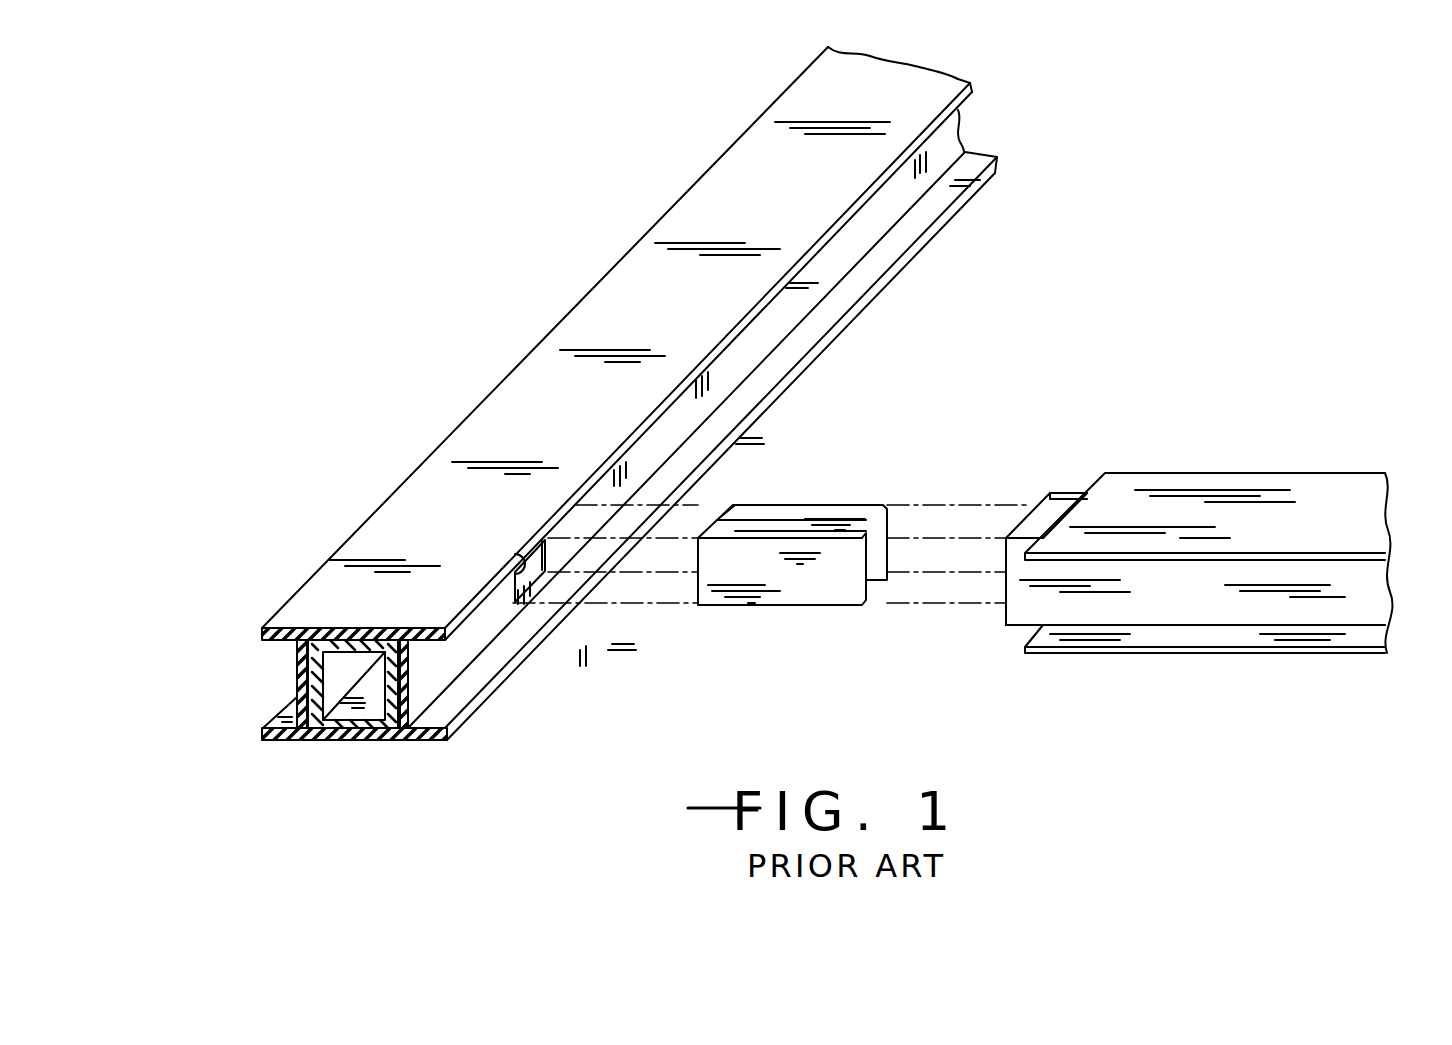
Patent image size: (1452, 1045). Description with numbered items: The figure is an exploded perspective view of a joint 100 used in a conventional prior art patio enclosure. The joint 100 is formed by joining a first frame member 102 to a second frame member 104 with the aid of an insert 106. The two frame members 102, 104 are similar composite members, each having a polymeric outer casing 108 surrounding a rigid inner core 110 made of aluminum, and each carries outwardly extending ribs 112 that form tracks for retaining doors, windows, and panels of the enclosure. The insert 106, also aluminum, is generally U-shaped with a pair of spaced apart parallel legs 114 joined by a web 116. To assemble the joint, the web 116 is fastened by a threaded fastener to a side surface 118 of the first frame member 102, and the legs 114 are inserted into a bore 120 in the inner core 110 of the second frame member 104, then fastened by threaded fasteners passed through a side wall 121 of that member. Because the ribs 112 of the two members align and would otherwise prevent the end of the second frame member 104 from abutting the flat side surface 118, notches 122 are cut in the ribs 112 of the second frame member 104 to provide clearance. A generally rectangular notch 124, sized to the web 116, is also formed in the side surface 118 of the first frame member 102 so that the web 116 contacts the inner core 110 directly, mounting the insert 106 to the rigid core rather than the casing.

The joint 100 is at (1218, 165).
The first frame member 102 is at (646, 393).
The second frame member 104 is at (1357, 511).
The insert 106 is at (822, 544).
The polymeric outer casing 108 is at (805, 524).
The rigid inner core 110 is at (846, 602).
The outwardly extending ribs 112 is at (778, 663).
The legs 114 is at (822, 563).
The web 116 is at (761, 481).
The side surface 118 is at (553, 621).
The bore 120 is at (1025, 516).
The side wall 121 is at (1195, 661).
The notches 122 is at (1128, 473).
The rectangular notch 124 is at (485, 527).